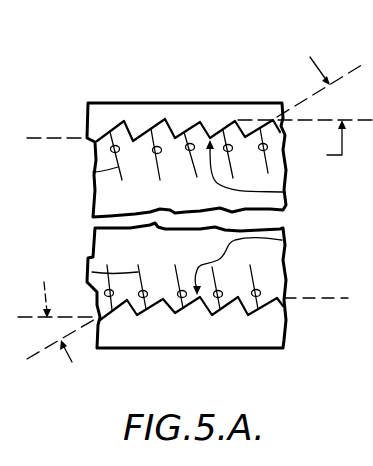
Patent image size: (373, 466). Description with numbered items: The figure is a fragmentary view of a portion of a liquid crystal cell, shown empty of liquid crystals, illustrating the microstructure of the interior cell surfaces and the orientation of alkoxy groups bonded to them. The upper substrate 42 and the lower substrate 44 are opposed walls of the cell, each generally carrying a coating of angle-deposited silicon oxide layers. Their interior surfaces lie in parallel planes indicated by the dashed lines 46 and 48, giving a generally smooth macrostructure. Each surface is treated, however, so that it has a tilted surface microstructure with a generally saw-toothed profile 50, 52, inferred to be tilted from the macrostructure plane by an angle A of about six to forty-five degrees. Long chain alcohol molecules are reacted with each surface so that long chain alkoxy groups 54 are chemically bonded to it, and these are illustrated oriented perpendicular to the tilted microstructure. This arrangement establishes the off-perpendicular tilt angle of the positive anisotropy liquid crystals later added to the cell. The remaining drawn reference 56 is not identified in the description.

The upper substrate 42 is at (128, 103).
The lower substrate 44 is at (263, 348).
The dashed line 46 is at (325, 99).
The dashed line 48 is at (312, 298).
The saw-toothed profile 50 is at (285, 192).
The saw-toothed profile 52 is at (282, 240).
The alkoxy groups 54 is at (93, 172).
The horizontal reference line (upper) 56 is at (372, 96).